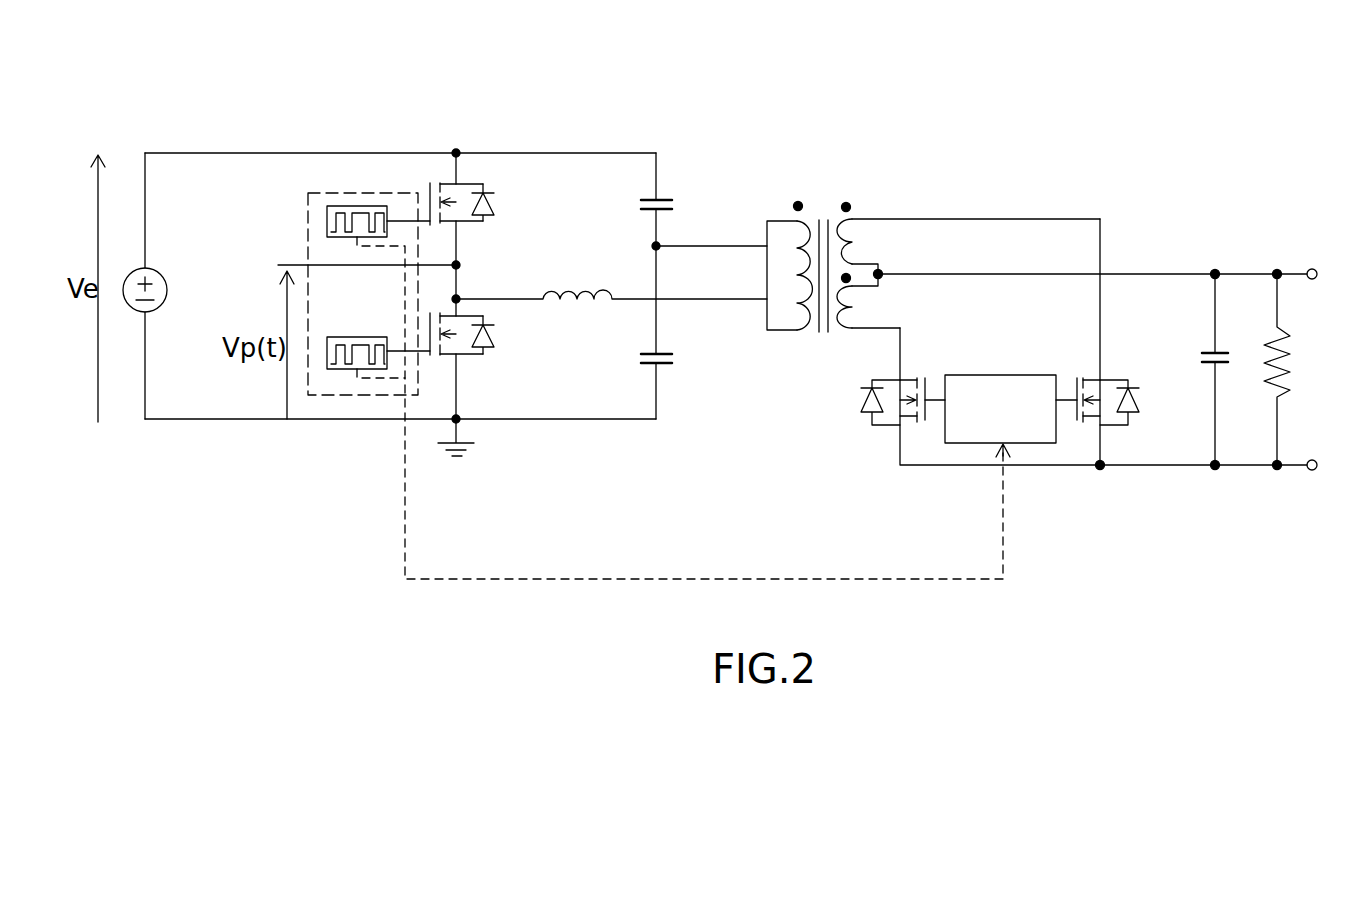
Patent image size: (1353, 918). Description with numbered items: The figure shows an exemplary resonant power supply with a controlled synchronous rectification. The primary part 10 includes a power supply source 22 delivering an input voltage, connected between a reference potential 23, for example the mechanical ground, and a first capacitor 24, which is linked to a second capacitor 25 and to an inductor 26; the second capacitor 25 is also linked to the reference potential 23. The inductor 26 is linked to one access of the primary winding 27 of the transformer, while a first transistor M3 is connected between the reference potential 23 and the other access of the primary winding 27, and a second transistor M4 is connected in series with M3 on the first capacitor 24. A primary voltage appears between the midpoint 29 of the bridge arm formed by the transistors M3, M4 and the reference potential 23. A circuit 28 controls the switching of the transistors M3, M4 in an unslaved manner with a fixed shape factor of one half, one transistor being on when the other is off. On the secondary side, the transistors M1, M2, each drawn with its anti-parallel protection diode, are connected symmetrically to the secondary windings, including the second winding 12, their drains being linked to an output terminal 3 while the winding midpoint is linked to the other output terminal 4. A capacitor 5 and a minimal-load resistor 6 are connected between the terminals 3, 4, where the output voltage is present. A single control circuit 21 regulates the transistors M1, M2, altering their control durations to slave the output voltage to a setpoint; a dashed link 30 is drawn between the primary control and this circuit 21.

The primary part 10 is at (770, 60).
The power supply source 22 is at (167, 287).
The control circuit 28 is at (361, 193).
The midpoint 29 is at (459, 265).
The reference potential 23 is at (474, 443).
The first capacitor 24 is at (673, 205).
The second capacitor 25 is at (673, 360).
The inductor 26 is at (588, 284).
The primary winding 27 is at (797, 331).
The second winding 12 is at (855, 219).
The control circuit 21 is at (1003, 375).
The capacitor 5 is at (1229, 362).
The resistor 6 is at (1290, 372).
The output terminal 4 is at (1314, 269).
The output terminal 3 is at (1314, 470).
The control link 30 is at (806, 582).
The first transistor M1 is at (884, 401).
The second transistor M2 is at (1118, 401).
The first transistor M3 is at (484, 334).
The second transistor M4 is at (484, 204).